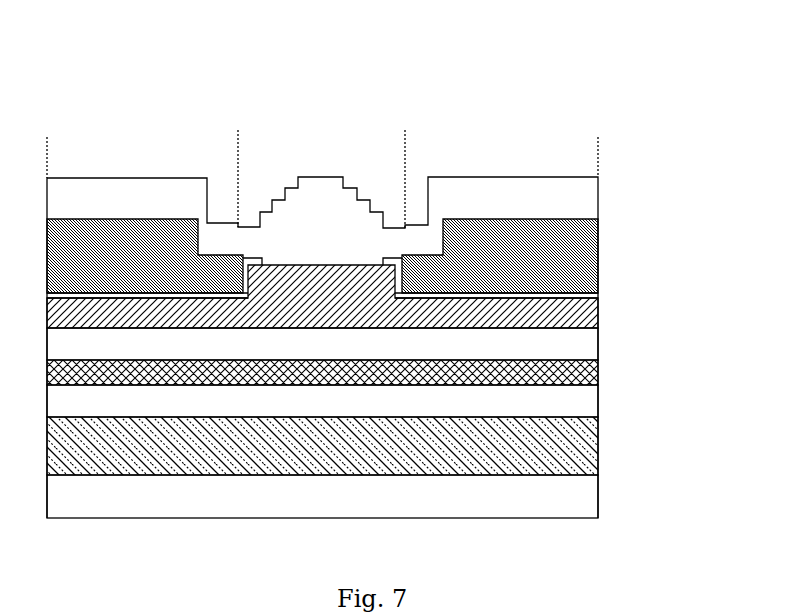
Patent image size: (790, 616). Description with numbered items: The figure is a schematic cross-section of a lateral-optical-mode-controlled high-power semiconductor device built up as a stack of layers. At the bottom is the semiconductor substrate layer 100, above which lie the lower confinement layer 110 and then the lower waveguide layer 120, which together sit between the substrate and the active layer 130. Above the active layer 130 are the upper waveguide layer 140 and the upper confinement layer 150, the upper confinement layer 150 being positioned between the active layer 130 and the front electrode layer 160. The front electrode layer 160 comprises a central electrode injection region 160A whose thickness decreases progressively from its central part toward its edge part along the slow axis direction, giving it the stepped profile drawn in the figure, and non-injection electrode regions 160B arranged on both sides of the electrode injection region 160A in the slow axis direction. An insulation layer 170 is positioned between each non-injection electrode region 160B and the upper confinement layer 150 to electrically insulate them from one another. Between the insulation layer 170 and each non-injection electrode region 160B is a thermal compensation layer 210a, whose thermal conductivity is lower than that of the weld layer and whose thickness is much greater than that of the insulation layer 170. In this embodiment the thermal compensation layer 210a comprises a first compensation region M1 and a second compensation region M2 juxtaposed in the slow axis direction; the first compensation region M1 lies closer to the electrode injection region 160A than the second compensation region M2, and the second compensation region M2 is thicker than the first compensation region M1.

The semiconductor substrate layer 100 is at (552, 505).
The lower confinement layer 110 is at (550, 450).
The lower waveguide layer 120 is at (552, 410).
The active layer 130 is at (552, 371).
The upper waveguide layer 140 is at (557, 343).
The upper confinement layer 150 is at (553, 309).
The insulation layer 170 is at (548, 297).
The thermal compensation layer 210a is at (570, 243).
The front electrode layer 160 is at (497, 127).
The electrode injection region 160A is at (405, 143).
The non-injection electrode regions 160B is at (598, 155).
The first compensation region M1 is at (230, 290).
The second compensation region M2 is at (90, 270).